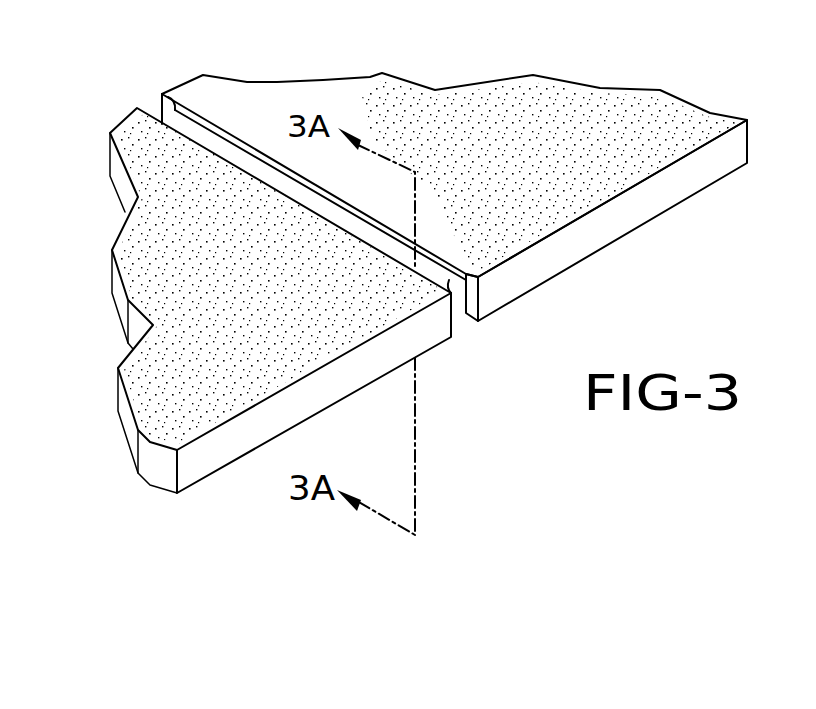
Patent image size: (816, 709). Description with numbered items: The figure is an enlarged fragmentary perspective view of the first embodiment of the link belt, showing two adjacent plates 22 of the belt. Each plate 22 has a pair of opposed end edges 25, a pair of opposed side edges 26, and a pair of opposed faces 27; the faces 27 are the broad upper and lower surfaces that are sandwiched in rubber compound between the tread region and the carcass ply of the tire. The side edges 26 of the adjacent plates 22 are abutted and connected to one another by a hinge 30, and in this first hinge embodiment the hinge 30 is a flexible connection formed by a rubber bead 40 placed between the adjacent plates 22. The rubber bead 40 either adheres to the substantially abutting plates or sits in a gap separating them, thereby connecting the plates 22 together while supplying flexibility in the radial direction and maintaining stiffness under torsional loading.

The plate 22 is at (481, 95).
The end edge 25 is at (632, 213).
The side edge 26 is at (168, 105).
The face 27 is at (563, 123).
The hinge 30 is at (465, 335).
The rubber bead 40 is at (229, 150).